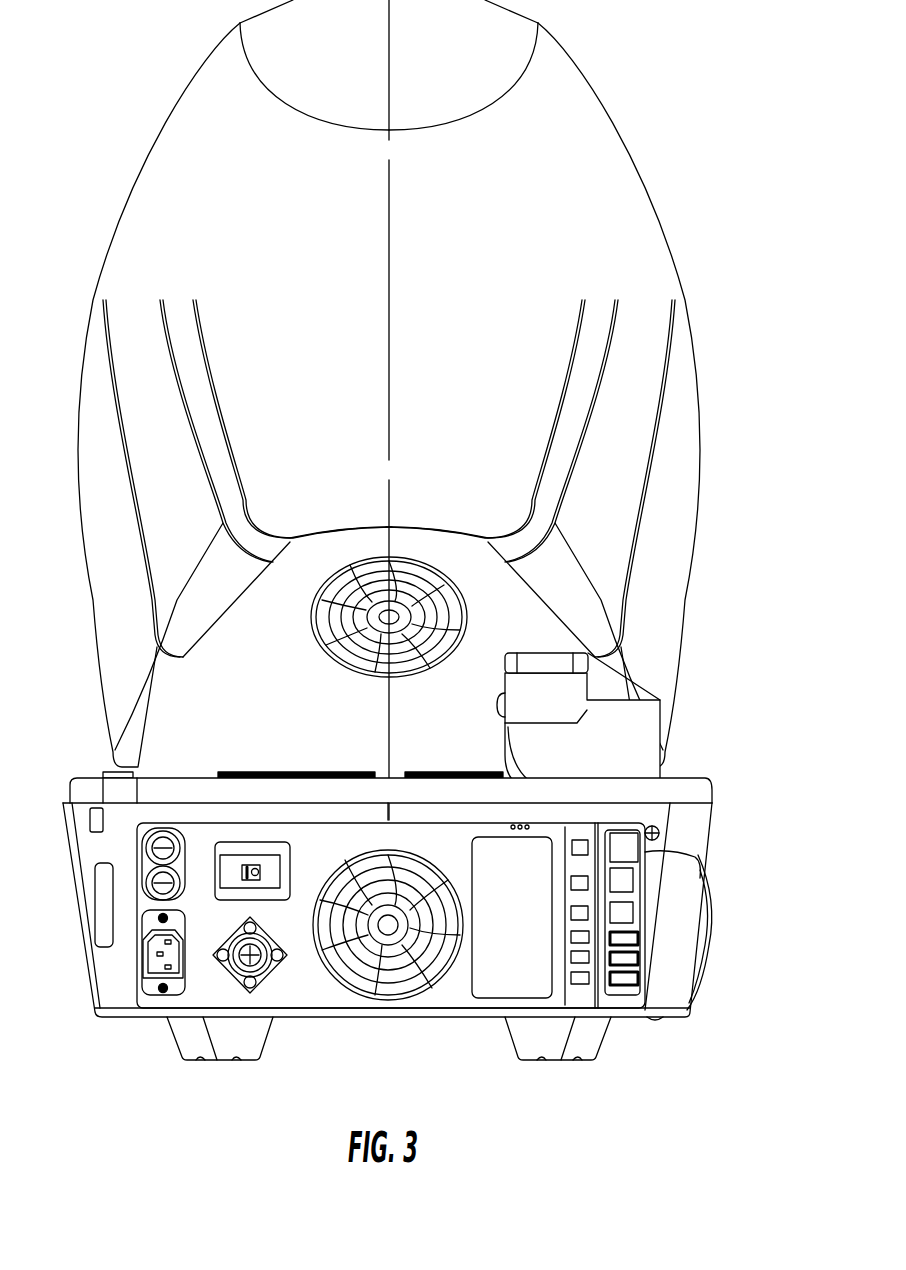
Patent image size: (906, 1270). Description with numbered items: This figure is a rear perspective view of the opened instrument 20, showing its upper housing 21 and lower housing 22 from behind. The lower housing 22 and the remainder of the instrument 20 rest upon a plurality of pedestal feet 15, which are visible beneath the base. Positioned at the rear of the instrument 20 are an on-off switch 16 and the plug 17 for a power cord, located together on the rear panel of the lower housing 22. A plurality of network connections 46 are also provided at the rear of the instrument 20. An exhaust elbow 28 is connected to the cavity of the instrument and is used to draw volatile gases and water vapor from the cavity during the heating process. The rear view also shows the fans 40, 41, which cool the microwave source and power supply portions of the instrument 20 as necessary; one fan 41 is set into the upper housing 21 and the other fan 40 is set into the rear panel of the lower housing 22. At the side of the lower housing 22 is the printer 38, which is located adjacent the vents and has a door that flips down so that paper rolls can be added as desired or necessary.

The instrument 20 is at (699, 108).
The upper housing 21 is at (471, 354).
The lower housing 22 is at (692, 835).
The exhaust elbow 28 is at (640, 723).
The printer 38 is at (698, 968).
The fan 40 is at (433, 987).
The fan 41 is at (310, 630).
The on-off switch 16 is at (273, 870).
The plug 17 is at (137, 965).
The network connections 46 is at (624, 1002).
The pedestal feet 15 is at (225, 1035).